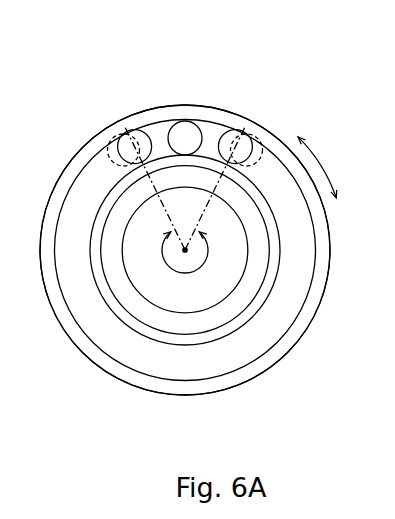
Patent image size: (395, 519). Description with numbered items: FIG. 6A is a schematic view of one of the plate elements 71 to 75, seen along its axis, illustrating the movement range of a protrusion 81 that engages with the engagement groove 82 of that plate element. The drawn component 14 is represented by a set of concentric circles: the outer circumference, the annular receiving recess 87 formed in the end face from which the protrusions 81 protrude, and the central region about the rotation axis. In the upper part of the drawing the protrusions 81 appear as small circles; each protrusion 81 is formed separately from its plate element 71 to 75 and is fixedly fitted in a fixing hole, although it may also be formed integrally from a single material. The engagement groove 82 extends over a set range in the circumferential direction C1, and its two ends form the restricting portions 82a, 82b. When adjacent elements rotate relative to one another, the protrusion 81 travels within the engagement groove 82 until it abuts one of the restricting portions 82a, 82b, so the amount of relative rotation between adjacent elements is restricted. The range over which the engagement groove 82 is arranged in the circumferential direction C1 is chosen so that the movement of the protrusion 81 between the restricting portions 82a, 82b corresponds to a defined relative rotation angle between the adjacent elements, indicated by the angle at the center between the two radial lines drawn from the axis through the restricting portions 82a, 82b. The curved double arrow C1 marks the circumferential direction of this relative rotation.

The cylindrical housing 14 is at (77, 133).
The plate element 71 is at (185, 215).
The plate element 72 is at (185, 215).
The plate element 73 is at (185, 215).
The plate element 74 is at (185, 215).
The plate element 75 is at (205, 107).
The protrusion 81 is at (110, 140).
The engagement groove 82 is at (158, 360).
The restricting portion 82a is at (137, 130).
The restricting portion 82b is at (235, 130).
The annular receiving recess 87 is at (235, 303).
The circumferential direction C1 is at (325, 169).